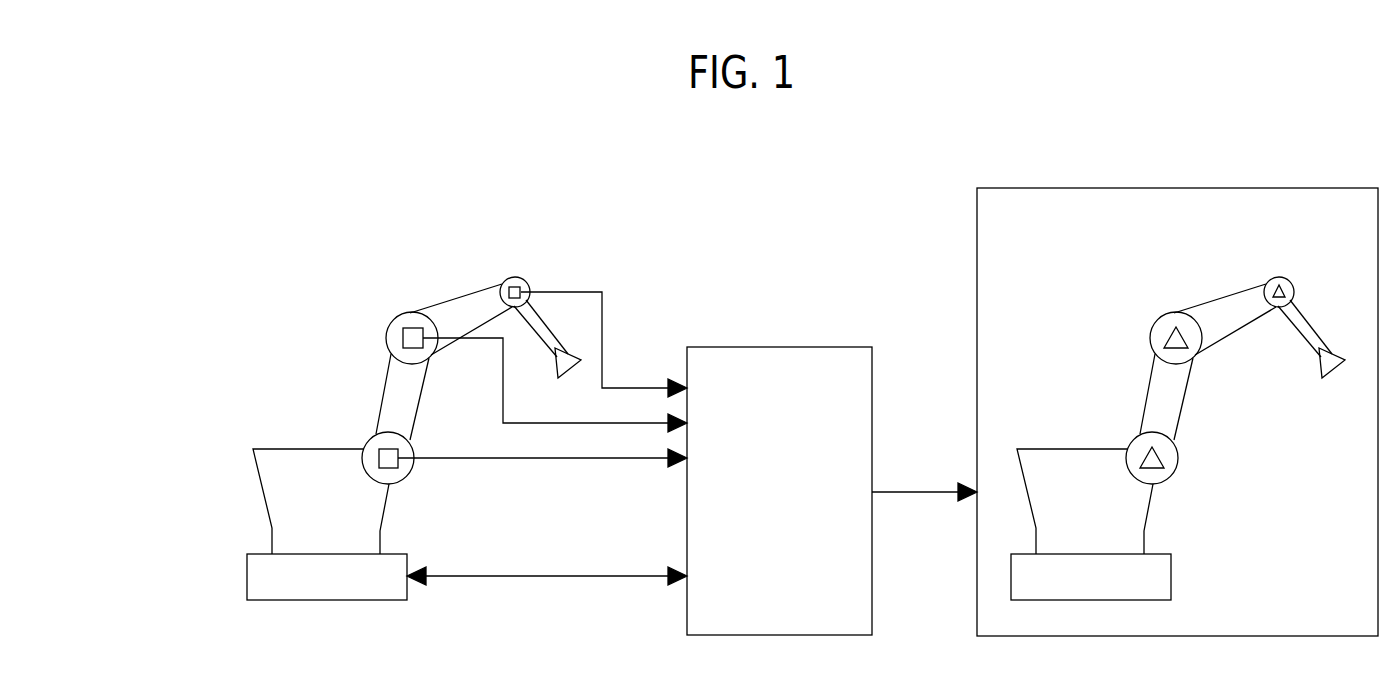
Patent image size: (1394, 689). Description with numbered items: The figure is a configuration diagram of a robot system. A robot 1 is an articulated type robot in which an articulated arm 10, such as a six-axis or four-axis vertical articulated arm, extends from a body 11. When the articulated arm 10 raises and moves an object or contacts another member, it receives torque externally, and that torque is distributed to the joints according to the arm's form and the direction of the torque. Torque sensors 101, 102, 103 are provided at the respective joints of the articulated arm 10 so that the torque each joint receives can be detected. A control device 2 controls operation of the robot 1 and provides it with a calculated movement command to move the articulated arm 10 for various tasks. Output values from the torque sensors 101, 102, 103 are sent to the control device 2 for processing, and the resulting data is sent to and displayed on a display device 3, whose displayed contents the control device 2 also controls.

The robot 1 is at (280, 477).
The articulated arm 10 is at (395, 388).
The body 11 is at (285, 505).
The torque sensor 101 is at (388, 449).
The torque sensor 102 is at (412, 327).
The torque sensor 103 is at (545, 203).
The control device 2 is at (779, 491).
The display device 3 is at (1177, 412).